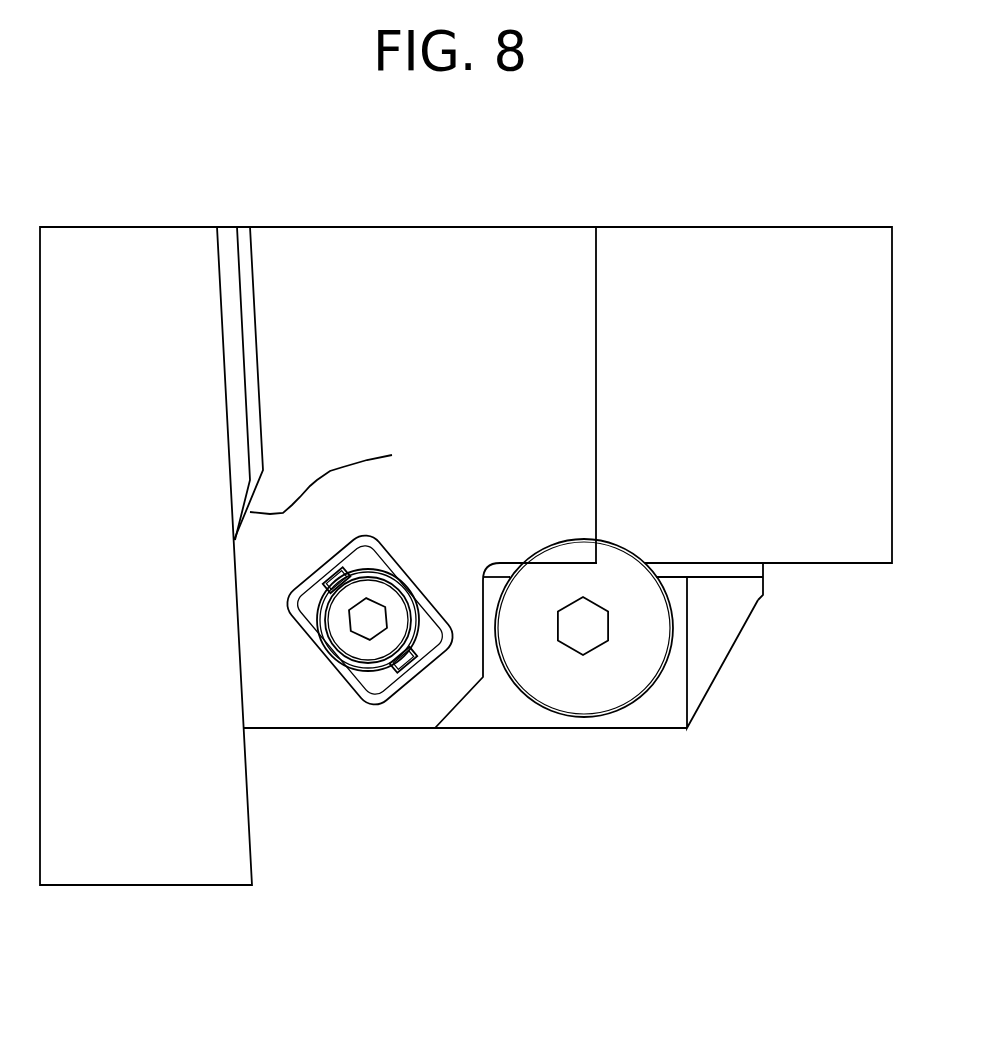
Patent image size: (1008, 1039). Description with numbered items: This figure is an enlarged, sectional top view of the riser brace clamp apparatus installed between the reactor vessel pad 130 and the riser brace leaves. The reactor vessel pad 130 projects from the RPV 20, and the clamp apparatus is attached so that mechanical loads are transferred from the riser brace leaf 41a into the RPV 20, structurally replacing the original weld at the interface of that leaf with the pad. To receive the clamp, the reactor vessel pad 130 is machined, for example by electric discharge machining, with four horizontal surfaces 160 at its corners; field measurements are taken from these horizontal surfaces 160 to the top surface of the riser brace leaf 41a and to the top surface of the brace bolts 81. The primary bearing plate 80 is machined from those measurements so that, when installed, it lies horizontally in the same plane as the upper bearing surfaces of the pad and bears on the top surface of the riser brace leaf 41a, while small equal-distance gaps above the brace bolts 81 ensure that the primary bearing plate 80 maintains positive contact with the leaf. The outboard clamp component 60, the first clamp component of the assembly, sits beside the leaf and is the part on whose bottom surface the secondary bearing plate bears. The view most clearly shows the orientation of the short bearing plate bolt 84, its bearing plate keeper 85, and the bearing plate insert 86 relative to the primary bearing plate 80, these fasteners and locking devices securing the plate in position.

The RPV 20 is at (108, 257).
The reactor vessel pad 130 is at (230, 265).
The horizontal surfaces 160 is at (406, 370).
The primary bearing plate 80 is at (587, 265).
The outboard clamp component 60 is at (612, 720).
The riser brace leaf 41a is at (750, 608).
The brace bolt 81 is at (640, 658).
The bearing plate insert 86 is at (432, 633).
The bearing plate keeper 85 is at (410, 656).
The short bearing plate bolt 84 is at (338, 632).